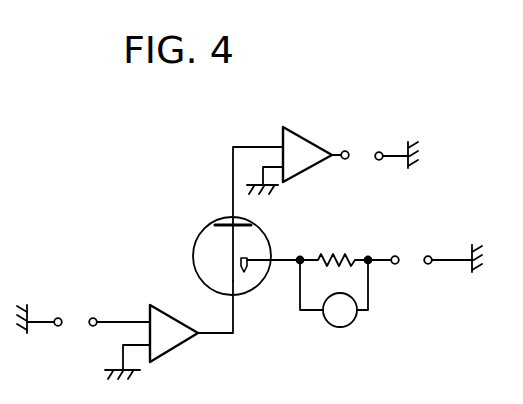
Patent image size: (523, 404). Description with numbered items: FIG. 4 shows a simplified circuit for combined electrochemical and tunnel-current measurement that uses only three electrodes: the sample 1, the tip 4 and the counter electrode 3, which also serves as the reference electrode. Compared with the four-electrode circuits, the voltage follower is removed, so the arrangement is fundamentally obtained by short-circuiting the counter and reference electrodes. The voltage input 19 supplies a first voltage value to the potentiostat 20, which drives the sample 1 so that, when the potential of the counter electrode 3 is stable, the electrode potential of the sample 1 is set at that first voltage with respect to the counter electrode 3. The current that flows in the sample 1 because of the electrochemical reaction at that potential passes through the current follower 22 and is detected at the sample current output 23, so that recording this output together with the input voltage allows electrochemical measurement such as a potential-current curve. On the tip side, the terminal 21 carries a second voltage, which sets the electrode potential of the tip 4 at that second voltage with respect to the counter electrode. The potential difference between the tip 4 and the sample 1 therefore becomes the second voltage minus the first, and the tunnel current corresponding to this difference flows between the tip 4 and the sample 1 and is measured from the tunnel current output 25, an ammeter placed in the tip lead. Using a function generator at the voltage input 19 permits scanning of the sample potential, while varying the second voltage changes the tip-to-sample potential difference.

The sample 1 is at (212, 276).
The counter electrode 3 is at (245, 224).
The tip 4 is at (247, 259).
The voltage input E1 19 is at (69, 352).
The potentiostat 20 is at (187, 340).
The voltage follower 21 is at (411, 290).
The current follower 22 is at (309, 139).
The sample current output 23 is at (392, 133).
The tunnel current output 25 is at (332, 327).